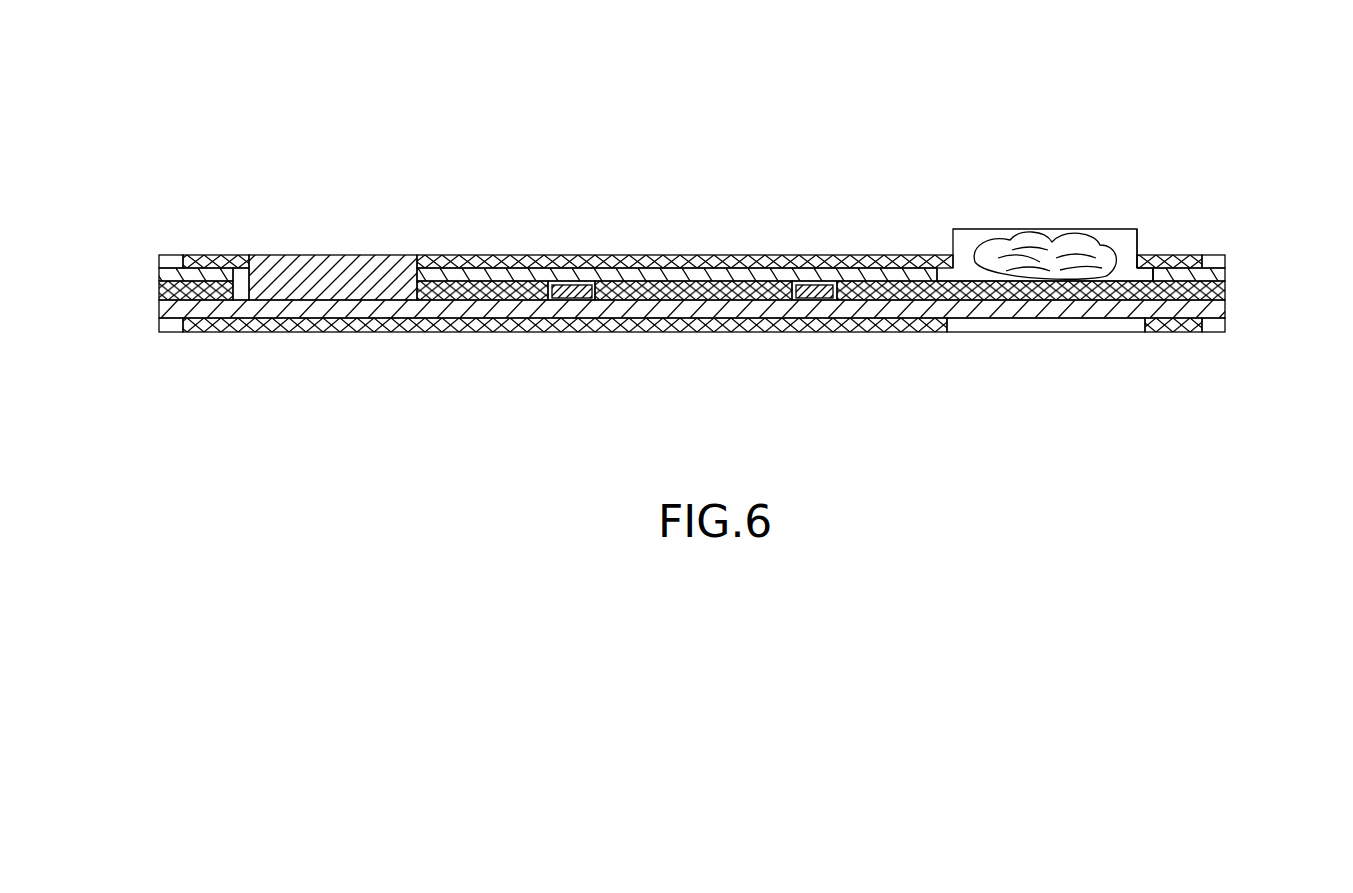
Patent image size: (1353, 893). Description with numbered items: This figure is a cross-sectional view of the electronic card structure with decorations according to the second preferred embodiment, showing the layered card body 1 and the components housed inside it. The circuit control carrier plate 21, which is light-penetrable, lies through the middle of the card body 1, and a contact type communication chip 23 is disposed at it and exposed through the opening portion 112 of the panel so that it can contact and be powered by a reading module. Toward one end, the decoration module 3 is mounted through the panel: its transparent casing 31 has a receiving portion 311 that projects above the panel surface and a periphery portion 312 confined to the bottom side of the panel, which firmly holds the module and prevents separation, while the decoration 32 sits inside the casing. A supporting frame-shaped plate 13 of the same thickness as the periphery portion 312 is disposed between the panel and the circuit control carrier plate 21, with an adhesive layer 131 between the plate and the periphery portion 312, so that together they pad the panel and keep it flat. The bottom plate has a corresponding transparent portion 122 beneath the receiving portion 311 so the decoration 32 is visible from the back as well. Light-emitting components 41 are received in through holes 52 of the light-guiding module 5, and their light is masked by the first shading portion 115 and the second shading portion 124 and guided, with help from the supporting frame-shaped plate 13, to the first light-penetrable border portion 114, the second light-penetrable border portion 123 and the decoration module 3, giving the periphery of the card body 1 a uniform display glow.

The card body 1 is at (185, 240).
The decoration module 3 is at (1053, 198).
The light-guiding module 5 is at (868, 292).
The supporting frame-shaped plate 13 is at (1225, 273).
The circuit control carrier plate 21 is at (482, 308).
The contact type communication chip 23 is at (343, 272).
The transparent casing 31 is at (983, 228).
The decoration 32 is at (1013, 273).
The light-emitting component 41 is at (567, 288).
The through hole 52 is at (540, 290).
The opening portion 112 is at (240, 272).
The first light-penetrable border portion 114 is at (168, 260).
The first shading portion 115 is at (884, 256).
The corresponding transparent portion 122 is at (1097, 326).
The second light-penetrable border portion 123 is at (168, 327).
The second shading portion 124 is at (744, 325).
The adhesive layer 131 is at (603, 288).
The receiving portion 311 is at (1127, 237).
The periphery portion 312 is at (1145, 275).